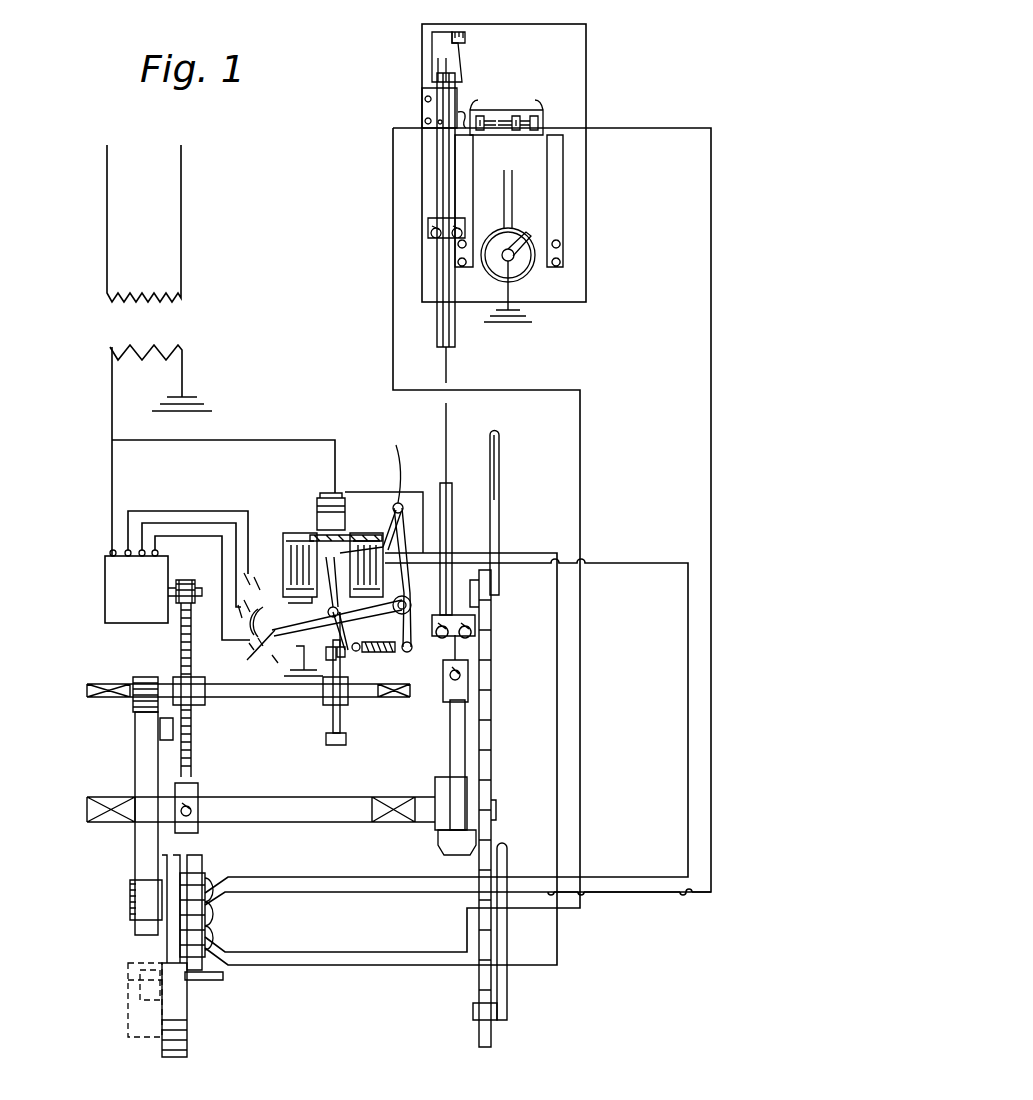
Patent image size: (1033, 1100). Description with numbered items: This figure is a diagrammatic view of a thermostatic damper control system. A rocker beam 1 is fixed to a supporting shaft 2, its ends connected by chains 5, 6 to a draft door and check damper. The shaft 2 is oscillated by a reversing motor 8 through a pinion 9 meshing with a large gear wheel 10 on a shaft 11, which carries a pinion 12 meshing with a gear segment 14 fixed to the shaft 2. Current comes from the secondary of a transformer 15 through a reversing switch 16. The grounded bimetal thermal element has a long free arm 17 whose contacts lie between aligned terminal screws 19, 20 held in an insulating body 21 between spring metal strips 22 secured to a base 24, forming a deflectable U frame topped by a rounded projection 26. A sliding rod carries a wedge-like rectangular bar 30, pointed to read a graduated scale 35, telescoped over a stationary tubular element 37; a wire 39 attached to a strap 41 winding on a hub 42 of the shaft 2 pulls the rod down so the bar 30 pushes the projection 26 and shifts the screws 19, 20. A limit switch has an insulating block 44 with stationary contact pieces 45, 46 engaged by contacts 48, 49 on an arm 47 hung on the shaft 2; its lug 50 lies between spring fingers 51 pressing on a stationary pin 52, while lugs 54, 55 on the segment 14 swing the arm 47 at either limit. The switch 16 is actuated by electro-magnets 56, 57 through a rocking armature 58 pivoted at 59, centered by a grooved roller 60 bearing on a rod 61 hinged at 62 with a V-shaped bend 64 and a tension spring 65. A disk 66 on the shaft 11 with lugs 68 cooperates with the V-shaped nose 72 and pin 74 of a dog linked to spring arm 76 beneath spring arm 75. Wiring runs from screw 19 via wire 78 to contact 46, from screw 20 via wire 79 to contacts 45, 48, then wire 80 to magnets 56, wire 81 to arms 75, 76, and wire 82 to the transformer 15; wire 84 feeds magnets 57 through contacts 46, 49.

The rocker beam 1 is at (492, 750).
The supporting shaft 2 is at (345, 818).
The chain 5 is at (508, 940).
The chain 6 is at (500, 498).
The reversing motor 8 is at (104, 605).
The pinion 9 is at (190, 580).
The large gear wheel 10 is at (178, 640).
The shaft 11 is at (248, 700).
The pinion 12 is at (144, 676).
The gear segment 14 is at (134, 744).
The transformer 15 is at (176, 340).
The reversing switch 16 is at (250, 640).
The free arm 17 is at (510, 215).
The terminal screw 19 is at (480, 130).
The terminal screw 20 is at (530, 130).
The body of insulating material 21 is at (538, 112).
The spring metal strips 22 is at (475, 206).
The base or block 24 is at (588, 220).
The rounded projection 26 is at (462, 110).
The rectangular bar 30 is at (458, 60).
The graduated scale 35 is at (465, 36).
The stationary tubular element 37 is at (438, 198).
The wire 39 is at (444, 652).
The strap 41 is at (450, 730).
The hub-like portion 42 is at (436, 790).
The stationary block of insulating material 44 is at (205, 913).
The stationary contact piece 45 is at (208, 884).
The stationary contact piece 46 is at (208, 930).
The arm 47 is at (180, 848).
The contact 48 is at (210, 890).
The contact 49 is at (160, 920).
The lug 50 is at (150, 950).
The spring fingers 51 is at (180, 1048).
The stationary pin 52 is at (212, 982).
The lug 54 is at (174, 730).
The lug 55 is at (205, 885).
The electro-magnets 56 is at (282, 560).
The electro-magnets 57 is at (385, 545).
The rocking armature 58 is at (275, 660).
The pivot 59 is at (332, 590).
The grooved roller 60 is at (356, 625).
The rod 61 is at (404, 588).
The hinge 62 is at (401, 465).
The V-shaped bend 64 is at (412, 603).
The tension spring 65 is at (378, 652).
The disk 66 is at (324, 712).
The lugs 68 is at (328, 744).
The V-shaped nose 72 is at (344, 658).
The pin 74 is at (344, 645).
The spring arm 75 is at (338, 496).
The spring arm 76 is at (340, 510).
The wire 78 is at (582, 660).
The wire 79 is at (712, 446).
The wire 80 is at (688, 672).
The wire 81 is at (405, 500).
The wire 82 is at (270, 440).
The wire 84 is at (556, 698).